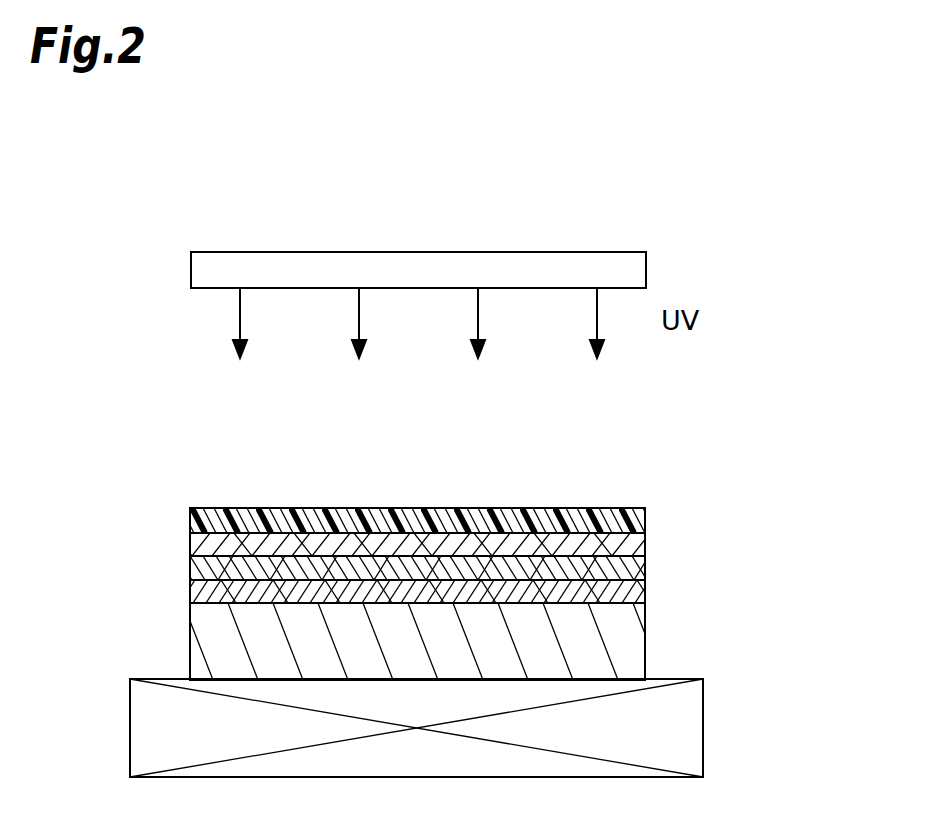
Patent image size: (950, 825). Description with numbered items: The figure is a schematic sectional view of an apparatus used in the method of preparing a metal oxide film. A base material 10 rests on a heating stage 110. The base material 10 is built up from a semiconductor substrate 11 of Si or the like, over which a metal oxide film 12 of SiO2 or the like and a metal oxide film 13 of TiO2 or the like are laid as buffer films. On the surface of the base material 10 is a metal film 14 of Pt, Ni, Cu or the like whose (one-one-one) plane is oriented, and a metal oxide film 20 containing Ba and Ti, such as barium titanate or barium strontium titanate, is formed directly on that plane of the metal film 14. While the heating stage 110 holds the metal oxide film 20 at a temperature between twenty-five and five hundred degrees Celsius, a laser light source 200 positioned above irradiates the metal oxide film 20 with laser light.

The laser light source 200 is at (646, 268).
The metal oxide film 20 is at (645, 517).
The base material 10 is at (492, 604).
The metal film 14 is at (645, 542).
The metal oxide film 13 is at (645, 567).
The metal oxide film 12 is at (645, 590).
The semiconductor substrate 11 is at (464, 641).
The heating stage 110 is at (703, 725).